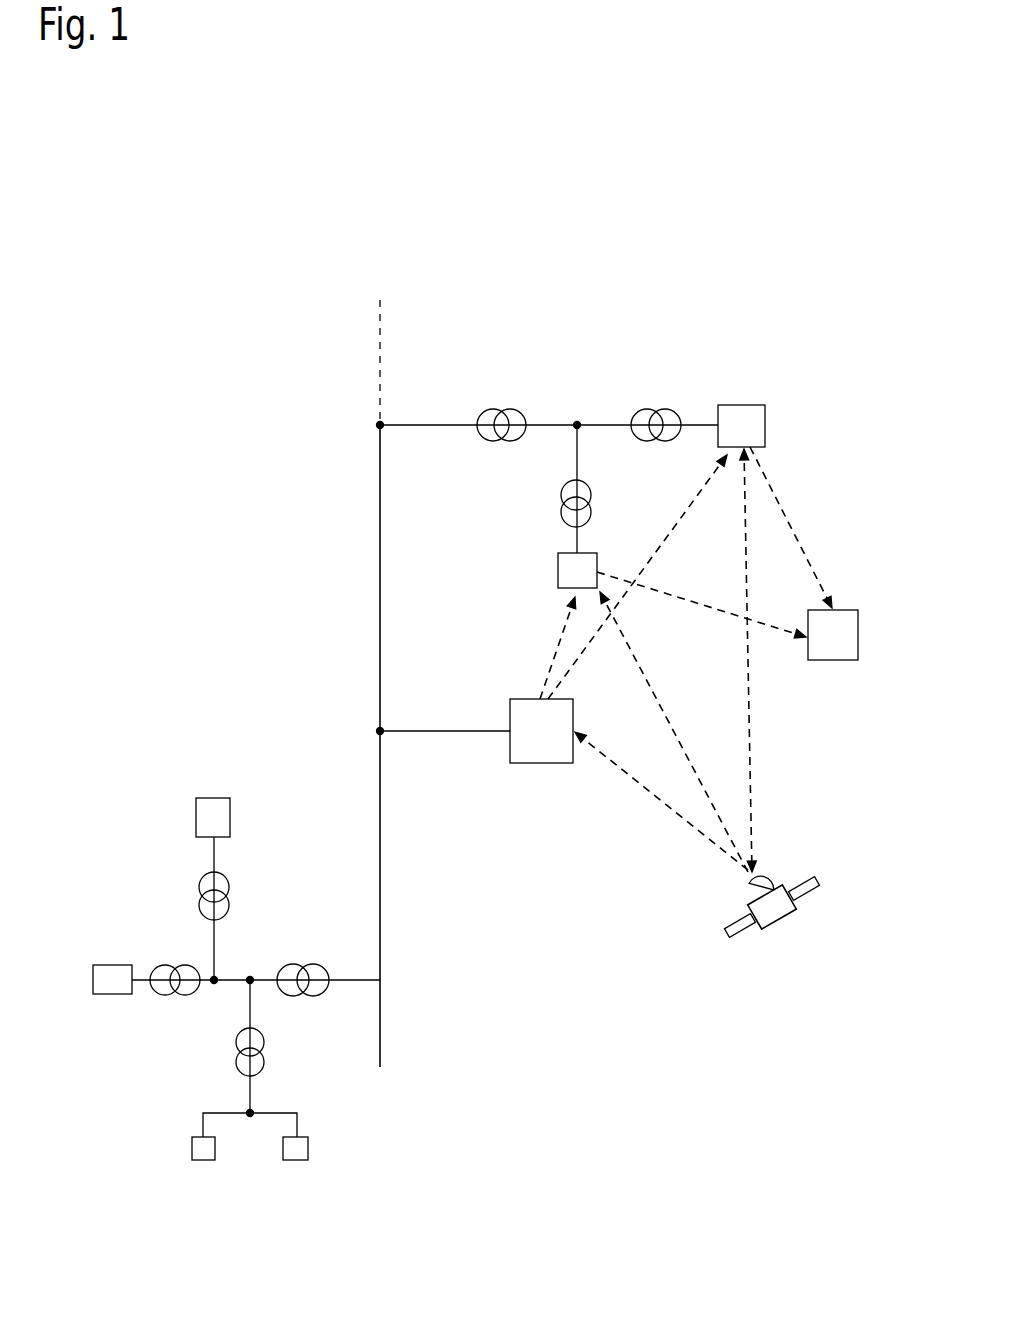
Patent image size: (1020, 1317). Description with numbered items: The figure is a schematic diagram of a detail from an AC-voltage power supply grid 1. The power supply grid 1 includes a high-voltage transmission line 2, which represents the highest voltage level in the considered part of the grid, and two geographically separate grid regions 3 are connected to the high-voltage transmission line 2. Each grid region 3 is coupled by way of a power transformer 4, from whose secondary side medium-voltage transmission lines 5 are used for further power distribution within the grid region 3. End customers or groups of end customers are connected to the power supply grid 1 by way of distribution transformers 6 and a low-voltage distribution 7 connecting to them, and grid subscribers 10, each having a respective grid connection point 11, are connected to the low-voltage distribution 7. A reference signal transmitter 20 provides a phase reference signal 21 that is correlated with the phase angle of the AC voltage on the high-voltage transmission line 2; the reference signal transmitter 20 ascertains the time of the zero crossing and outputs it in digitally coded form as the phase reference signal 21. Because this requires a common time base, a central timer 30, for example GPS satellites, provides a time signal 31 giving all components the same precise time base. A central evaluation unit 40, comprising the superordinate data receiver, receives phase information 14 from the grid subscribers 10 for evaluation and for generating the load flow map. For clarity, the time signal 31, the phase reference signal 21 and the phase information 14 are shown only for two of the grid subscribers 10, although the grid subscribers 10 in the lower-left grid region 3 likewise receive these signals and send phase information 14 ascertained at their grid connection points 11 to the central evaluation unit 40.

The power supply grid 1 is at (258, 431).
The high-voltage transmission line 2 is at (380, 593).
The grid region 3 is at (737, 313).
The power transformer 4 is at (492, 408).
The medium-voltage transmission line 5 is at (597, 422).
The distribution transformer 6 is at (665, 407).
The low-voltage distribution 7 is at (698, 423).
The grid subscriber 10 is at (758, 405).
The grid connection point 11 is at (718, 437).
The phase information 14 is at (802, 547).
The reference signal transmitter 20 is at (542, 764).
The phase reference signal 21 is at (563, 668).
The central timer 30 is at (777, 920).
The time signal 31 is at (752, 823).
The central evaluation unit 40 is at (848, 610).